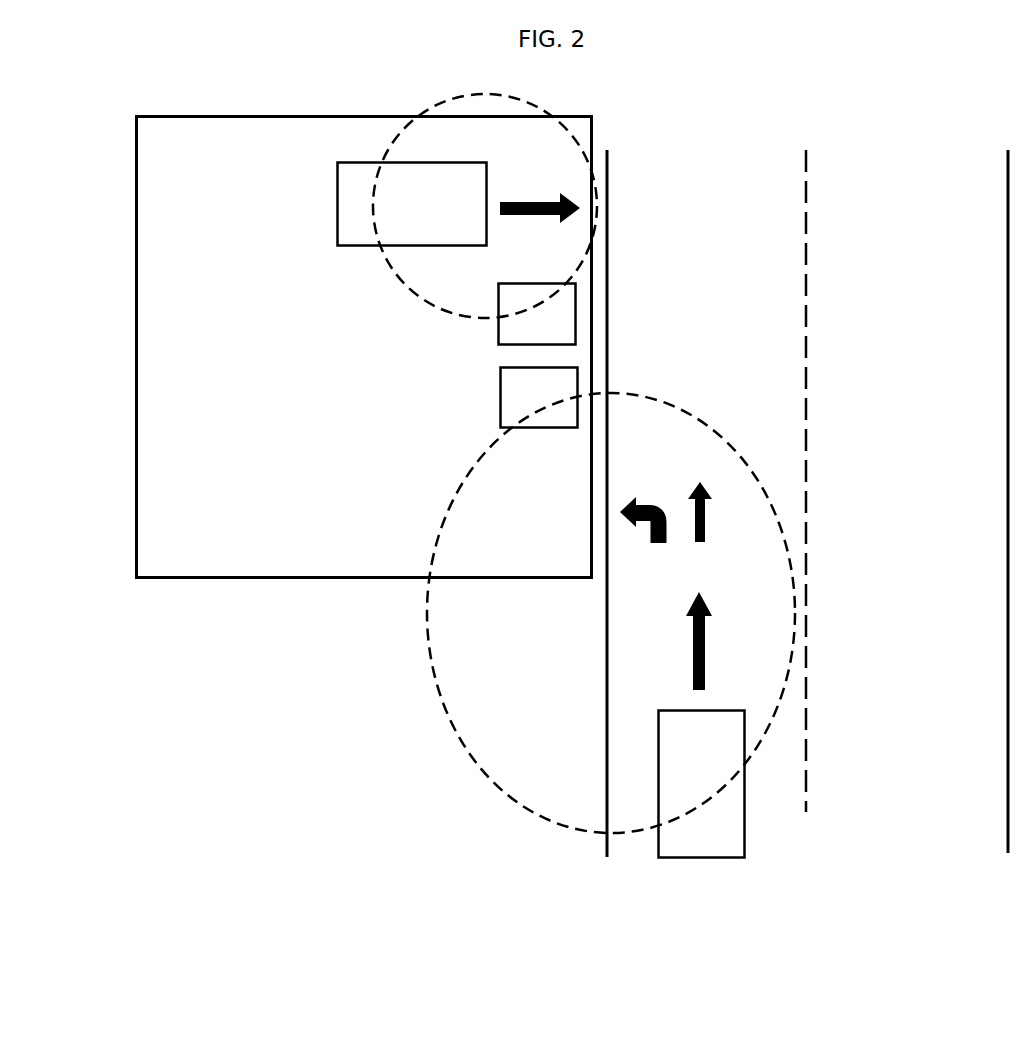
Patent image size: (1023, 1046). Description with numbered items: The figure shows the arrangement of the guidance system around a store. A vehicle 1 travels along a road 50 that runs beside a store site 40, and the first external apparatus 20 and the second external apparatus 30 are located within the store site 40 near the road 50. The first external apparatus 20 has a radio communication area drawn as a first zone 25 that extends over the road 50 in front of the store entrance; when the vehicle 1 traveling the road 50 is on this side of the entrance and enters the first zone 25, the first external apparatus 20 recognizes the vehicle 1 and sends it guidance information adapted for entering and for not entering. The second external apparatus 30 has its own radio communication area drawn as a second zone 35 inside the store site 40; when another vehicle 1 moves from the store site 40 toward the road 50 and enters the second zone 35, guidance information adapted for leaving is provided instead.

The vehicle 1 is at (397, 157).
The first external apparatus 20 is at (500, 400).
The first zone 25 is at (757, 482).
The second external apparatus 30 is at (498, 325).
The second zone 35 is at (502, 96).
The store site 40 is at (155, 579).
The road 50 is at (607, 138).